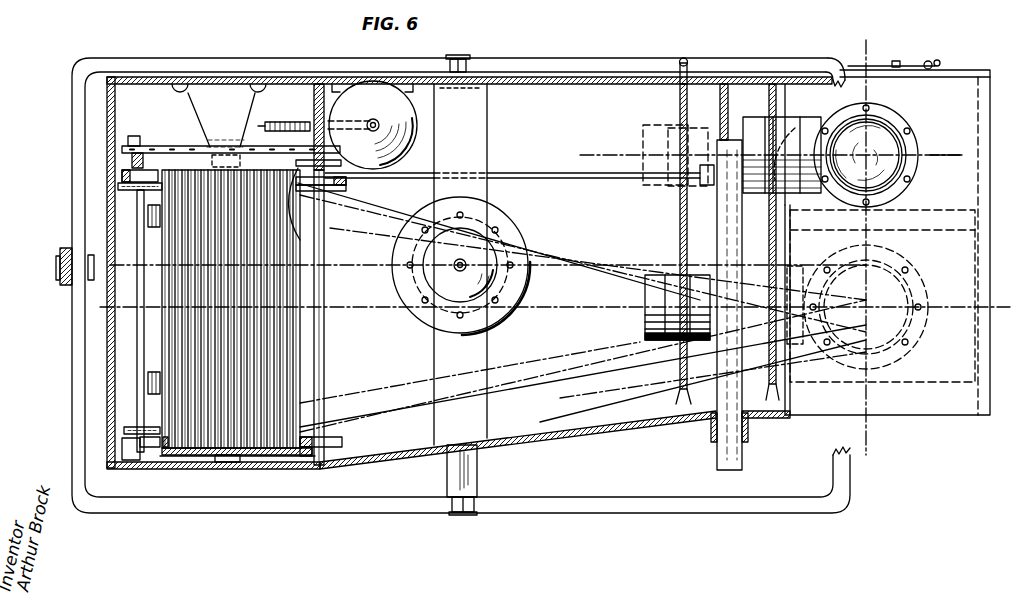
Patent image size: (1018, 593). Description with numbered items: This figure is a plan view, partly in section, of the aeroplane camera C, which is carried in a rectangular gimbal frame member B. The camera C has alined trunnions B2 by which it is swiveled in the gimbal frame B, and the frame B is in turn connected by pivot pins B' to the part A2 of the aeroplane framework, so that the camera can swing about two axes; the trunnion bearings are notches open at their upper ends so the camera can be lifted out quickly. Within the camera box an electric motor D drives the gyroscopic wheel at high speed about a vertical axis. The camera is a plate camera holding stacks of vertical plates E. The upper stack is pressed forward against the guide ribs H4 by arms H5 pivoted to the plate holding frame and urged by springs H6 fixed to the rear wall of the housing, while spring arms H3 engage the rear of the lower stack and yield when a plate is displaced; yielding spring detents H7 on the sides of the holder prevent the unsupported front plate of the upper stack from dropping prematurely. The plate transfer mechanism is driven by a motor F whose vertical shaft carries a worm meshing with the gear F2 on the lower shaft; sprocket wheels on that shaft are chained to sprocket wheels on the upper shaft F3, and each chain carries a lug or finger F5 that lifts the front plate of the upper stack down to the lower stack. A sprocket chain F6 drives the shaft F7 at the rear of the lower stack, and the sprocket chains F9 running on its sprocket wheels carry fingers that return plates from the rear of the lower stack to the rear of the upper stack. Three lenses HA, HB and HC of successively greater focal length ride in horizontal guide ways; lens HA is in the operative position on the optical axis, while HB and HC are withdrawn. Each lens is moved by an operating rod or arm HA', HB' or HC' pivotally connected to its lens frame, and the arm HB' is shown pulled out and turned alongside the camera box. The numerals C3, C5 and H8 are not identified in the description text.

The rectangular gimbal frame member B is at (461, 272).
The pivot pins B' is at (55, 265).
The trunnions B2 is at (466, 55).
The camera C is at (533, 433).
The casing bottom wall C3 is at (205, 470).
The casing cover screw C5 is at (897, 60).
The electric motor D is at (461, 266).
The plates E is at (300, 378).
The motor F is at (372, 125).
The gear F2 is at (285, 122).
The upper shaft F3 is at (326, 239).
The lug or finger F5 is at (318, 196).
The sprocket chain F6 is at (178, 146).
The shaft F7 is at (138, 341).
The sprocket chains F9 is at (126, 186).
The spring arms H3 is at (148, 213).
The guide ribs H4 is at (296, 163).
The arms H5 is at (772, 77).
The springs H6 is at (122, 176).
The yielding spring detents H7 is at (250, 483).
The arm H8 is at (330, 188).
The lens HA is at (668, 244).
The operating rod or arm HA' is at (649, 84).
The lens HB is at (782, 140).
The operating rod or arm HB' is at (907, 51).
The lens HC is at (887, 154).
The operating rod or arm HC' is at (727, 244).
The part of the aeroplane frame work A2 is at (62, 248).